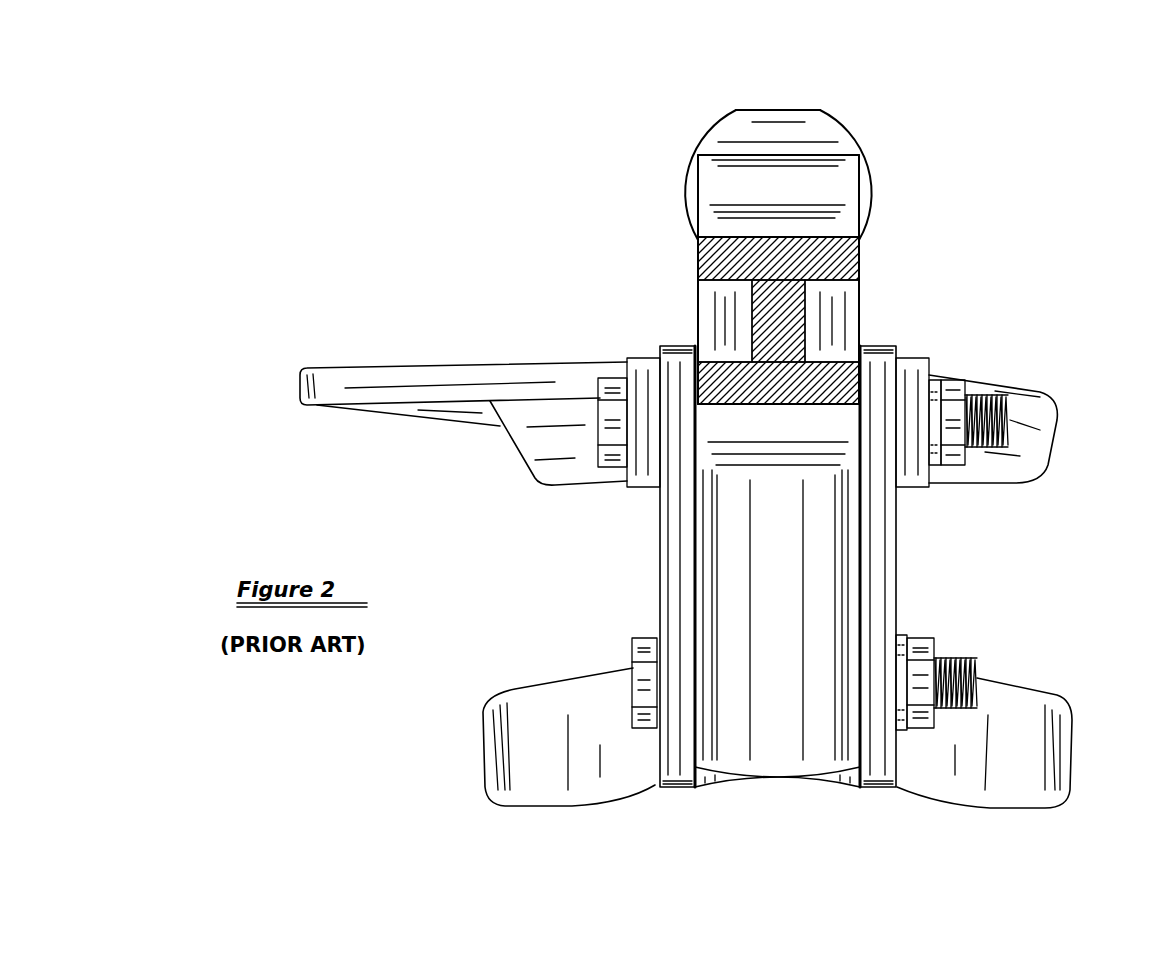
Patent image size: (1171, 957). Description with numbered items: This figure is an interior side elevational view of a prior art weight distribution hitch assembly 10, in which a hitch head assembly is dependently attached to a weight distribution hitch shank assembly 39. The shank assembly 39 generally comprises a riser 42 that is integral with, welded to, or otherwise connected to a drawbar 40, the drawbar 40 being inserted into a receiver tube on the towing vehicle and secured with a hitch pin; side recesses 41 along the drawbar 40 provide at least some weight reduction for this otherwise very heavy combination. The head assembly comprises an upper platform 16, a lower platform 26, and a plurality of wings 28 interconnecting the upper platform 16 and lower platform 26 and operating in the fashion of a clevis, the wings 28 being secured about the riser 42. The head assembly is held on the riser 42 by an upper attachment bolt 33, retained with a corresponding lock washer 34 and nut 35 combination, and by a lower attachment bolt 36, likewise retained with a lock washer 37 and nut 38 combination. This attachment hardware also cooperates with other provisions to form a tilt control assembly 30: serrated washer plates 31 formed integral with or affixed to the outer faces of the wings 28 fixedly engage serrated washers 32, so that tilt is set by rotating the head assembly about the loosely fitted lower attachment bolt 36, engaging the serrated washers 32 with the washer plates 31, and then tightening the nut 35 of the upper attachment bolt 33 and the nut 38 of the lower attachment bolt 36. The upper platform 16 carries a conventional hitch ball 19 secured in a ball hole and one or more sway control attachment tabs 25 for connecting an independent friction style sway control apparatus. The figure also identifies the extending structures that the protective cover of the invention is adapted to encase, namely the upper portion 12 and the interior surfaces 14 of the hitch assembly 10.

The weight distribution hitch assembly 10 is at (1060, 200).
The upper portion 12 is at (626, 157).
The interior surfaces 14 is at (824, 620).
The upper platform 16 is at (473, 362).
The hitch ball 19 is at (818, 128).
The sway control attachment tab 25 is at (347, 375).
The lower platform 26 is at (533, 727).
The wings 28 is at (677, 550).
The tilt control assembly 30 is at (987, 322).
The serrated washer plate 31 is at (657, 358).
The serrated washer 32 is at (630, 370).
The upper attachment bolt 33 is at (610, 428).
The lock washer 34 is at (937, 407).
The nut 35 is at (955, 460).
The lower attachment bolt 36 is at (637, 650).
The lock washer 37 is at (902, 693).
The nut 38 is at (925, 715).
The weight distribution hitch shank assembly 39 is at (840, 182).
The drawbar 40 is at (845, 262).
The side recesses 41 is at (708, 312).
The riser 42 is at (760, 743).